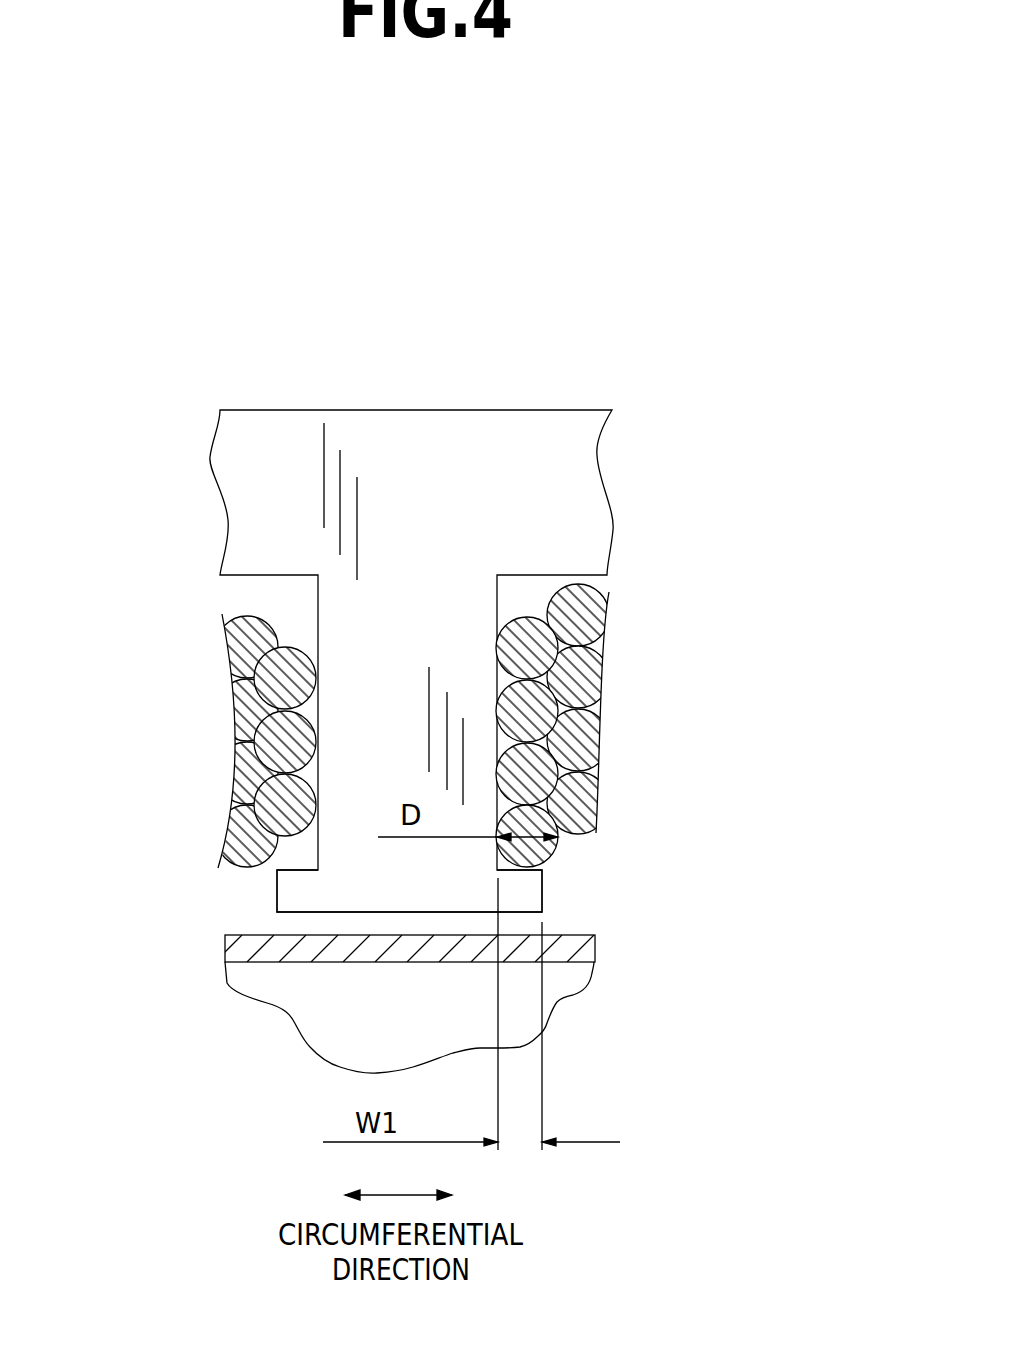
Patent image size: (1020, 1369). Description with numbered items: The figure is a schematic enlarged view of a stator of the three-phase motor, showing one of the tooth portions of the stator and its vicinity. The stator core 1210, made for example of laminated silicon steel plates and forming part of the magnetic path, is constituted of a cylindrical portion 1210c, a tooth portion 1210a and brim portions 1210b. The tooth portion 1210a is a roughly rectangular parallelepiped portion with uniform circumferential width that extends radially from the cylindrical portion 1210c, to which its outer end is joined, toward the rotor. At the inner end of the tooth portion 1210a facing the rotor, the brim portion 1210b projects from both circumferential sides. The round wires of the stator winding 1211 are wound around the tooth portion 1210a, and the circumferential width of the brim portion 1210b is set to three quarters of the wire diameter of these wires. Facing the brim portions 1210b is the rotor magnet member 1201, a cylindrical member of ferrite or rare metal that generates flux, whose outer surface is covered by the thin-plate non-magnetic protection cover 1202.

The stator core 1210 is at (373, 410).
The cylindrical portion 1210c is at (533, 438).
The tooth portion 1210a is at (410, 608).
The brim portion 1210b is at (290, 893).
The stator winding 1211 is at (587, 678).
The protection cover 1202 is at (565, 949).
The rotor magnet member 1201 is at (553, 985).